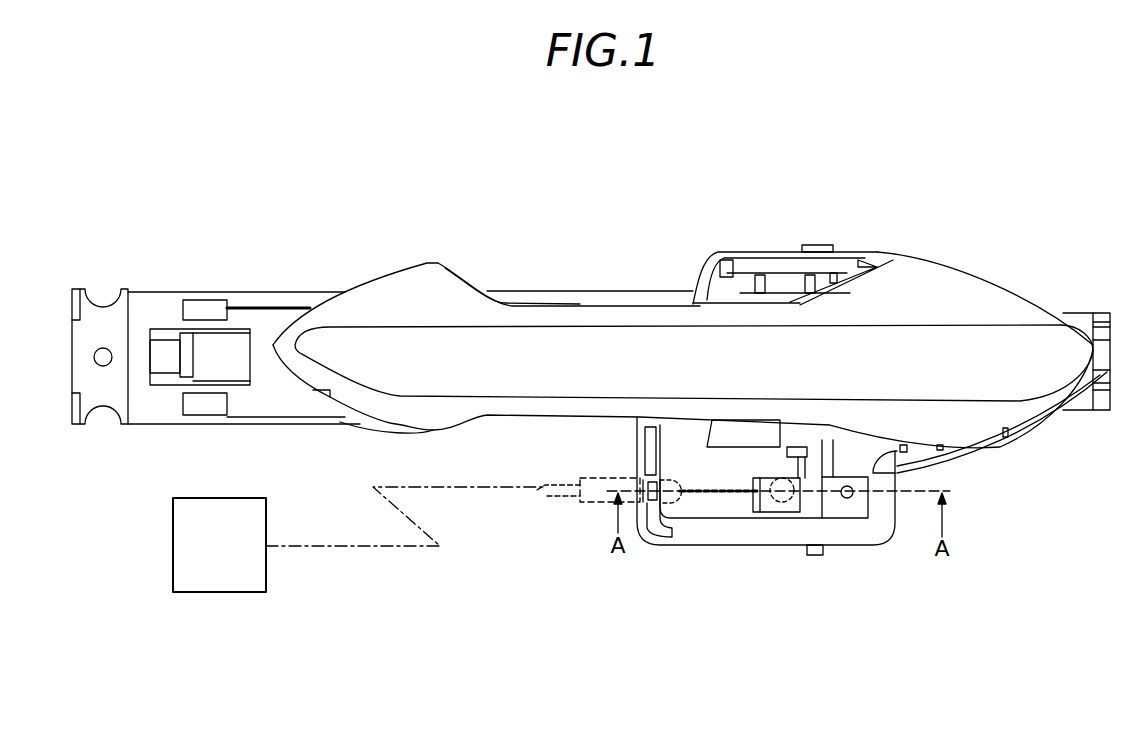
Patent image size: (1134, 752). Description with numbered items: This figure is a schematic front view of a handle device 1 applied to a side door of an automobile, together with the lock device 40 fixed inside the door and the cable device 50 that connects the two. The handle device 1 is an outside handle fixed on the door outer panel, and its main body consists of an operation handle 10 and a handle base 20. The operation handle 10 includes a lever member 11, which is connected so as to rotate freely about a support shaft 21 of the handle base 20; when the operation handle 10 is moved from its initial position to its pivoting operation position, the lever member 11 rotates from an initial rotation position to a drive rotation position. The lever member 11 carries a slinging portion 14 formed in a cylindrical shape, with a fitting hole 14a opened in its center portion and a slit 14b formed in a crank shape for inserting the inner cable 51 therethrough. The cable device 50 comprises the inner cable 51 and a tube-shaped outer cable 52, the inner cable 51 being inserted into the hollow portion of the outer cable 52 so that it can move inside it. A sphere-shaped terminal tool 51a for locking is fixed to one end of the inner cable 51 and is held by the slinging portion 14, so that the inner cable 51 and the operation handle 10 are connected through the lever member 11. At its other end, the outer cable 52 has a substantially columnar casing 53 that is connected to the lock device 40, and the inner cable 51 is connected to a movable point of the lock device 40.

The handle device 1 is at (695, 155).
The operation handle 10 is at (455, 282).
The lever member 11 is at (782, 470).
The slinging portion 14 is at (748, 507).
The fitting hole 14a is at (772, 512).
The slit 14b is at (753, 488).
The handle base 20 is at (973, 457).
The support shaft 21 is at (821, 556).
The lock device 40 is at (225, 593).
The cable device 50 is at (540, 497).
The inner cable 51 is at (710, 495).
The terminal tool for locking 51a is at (755, 528).
The outer cable 52 is at (555, 500).
The casing 53 is at (606, 503).